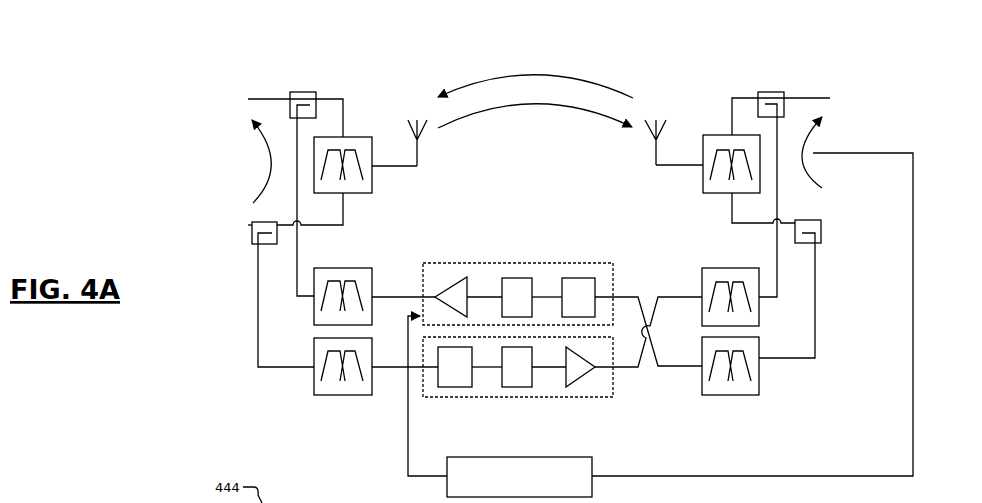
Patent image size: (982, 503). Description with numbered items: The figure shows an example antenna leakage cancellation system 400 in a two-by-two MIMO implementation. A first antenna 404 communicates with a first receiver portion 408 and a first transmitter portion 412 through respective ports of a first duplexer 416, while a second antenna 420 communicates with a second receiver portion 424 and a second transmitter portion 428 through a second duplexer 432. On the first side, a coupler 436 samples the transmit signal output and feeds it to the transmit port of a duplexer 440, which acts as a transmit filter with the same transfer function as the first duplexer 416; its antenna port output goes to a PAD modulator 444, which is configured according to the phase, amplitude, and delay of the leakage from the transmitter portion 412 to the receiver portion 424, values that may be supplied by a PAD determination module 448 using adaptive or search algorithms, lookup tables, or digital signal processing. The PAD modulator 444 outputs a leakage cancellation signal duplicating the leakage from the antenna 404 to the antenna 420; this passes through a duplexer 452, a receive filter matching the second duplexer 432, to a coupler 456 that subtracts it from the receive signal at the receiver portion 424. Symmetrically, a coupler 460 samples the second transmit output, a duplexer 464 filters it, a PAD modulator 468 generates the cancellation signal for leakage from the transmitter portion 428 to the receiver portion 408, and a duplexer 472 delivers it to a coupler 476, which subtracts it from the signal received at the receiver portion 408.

The antenna leakage cancellation system 400 is at (151, 94).
The first antenna 404 is at (410, 130).
The first receiver portion 408 is at (333, 98).
The first transmitter portion 412 is at (317, 227).
The first duplexer 416 is at (372, 193).
The second antenna 420 is at (665, 128).
The second receiver portion 424 is at (732, 98).
The second transmitter portion 428 is at (752, 225).
The second duplexer 432 is at (703, 193).
The coupler 436 is at (253, 245).
The duplexer 440 is at (342, 395).
The PAD modulator 444 is at (557, 398).
The PAD determination module 448 is at (592, 462).
The duplexer 452 is at (702, 275).
The coupler 456 is at (774, 92).
The coupler 460 is at (822, 220).
The duplexer 464 is at (727, 395).
The PAD modulator 468 is at (520, 263).
The duplexer 472 is at (372, 268).
The coupler 476 is at (296, 92).